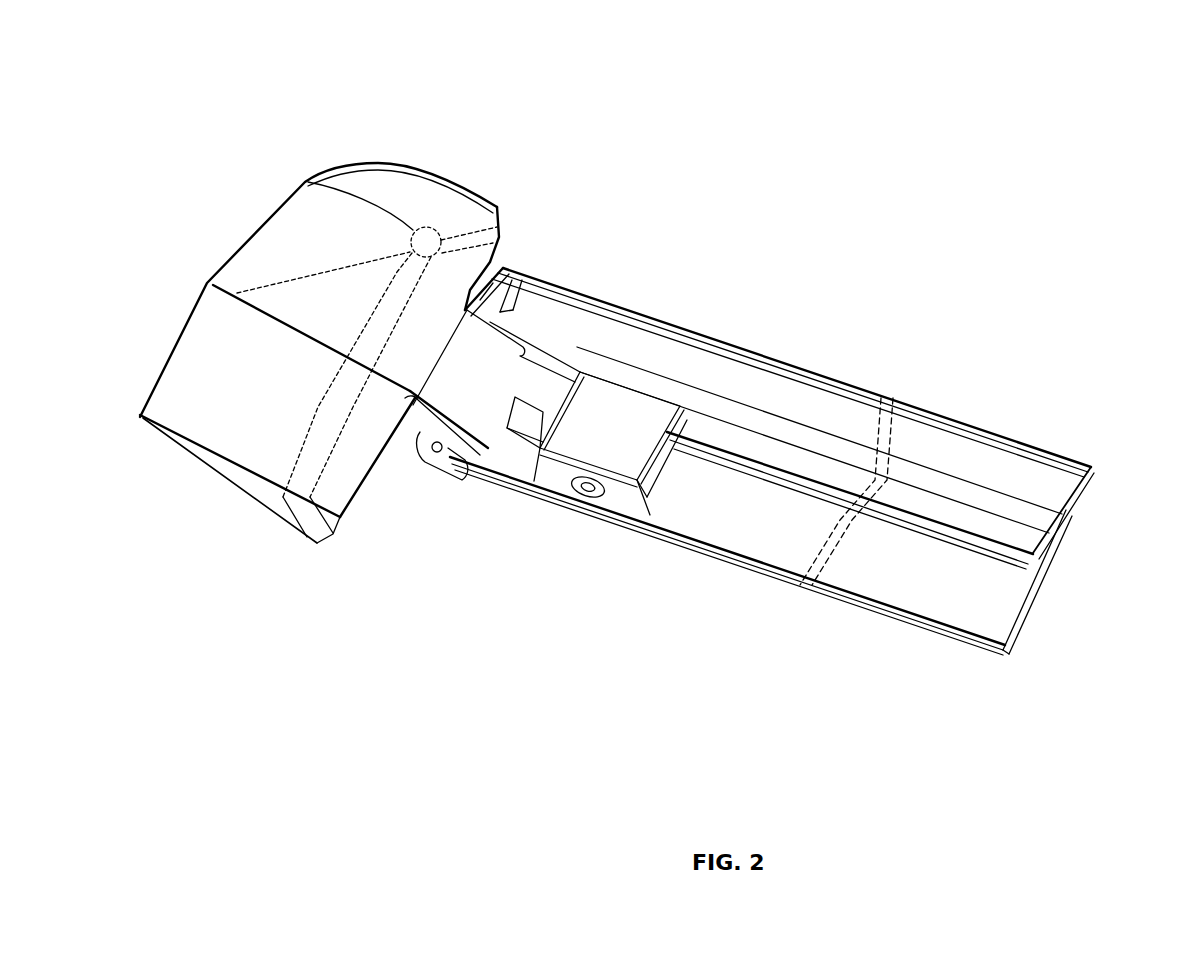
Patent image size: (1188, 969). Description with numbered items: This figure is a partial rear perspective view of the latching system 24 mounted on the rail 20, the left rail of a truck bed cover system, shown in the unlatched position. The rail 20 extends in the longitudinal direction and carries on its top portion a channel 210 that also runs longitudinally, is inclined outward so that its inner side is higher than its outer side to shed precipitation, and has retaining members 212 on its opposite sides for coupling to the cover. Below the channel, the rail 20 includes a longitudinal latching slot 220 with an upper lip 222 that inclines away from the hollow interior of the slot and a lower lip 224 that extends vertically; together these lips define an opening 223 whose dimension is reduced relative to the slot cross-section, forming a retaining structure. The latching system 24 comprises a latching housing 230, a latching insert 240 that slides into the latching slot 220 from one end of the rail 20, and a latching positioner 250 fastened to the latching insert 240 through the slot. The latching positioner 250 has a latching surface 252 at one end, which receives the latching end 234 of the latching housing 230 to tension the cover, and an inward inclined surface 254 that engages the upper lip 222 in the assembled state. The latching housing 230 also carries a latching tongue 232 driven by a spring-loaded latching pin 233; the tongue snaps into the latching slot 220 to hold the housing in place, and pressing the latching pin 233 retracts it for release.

The rail 20 is at (826, 247).
The latching system 24 is at (572, 80).
The channel 210 is at (1019, 418).
The retaining members 212 is at (1043, 510).
The latching slot 220 is at (1082, 551).
The upper lip 222 is at (1032, 545).
The opening 223 is at (1012, 576).
The lower lip 224 is at (1042, 560).
The latching housing 230 is at (430, 187).
The latching tongue 232 is at (503, 278).
The latching pin 233 is at (433, 460).
The latching end 234 is at (557, 400).
The latching insert 240 is at (503, 275).
The latching positioner 250 is at (633, 507).
The latching surface 252 is at (540, 460).
The inward inclined surface 254 is at (680, 427).